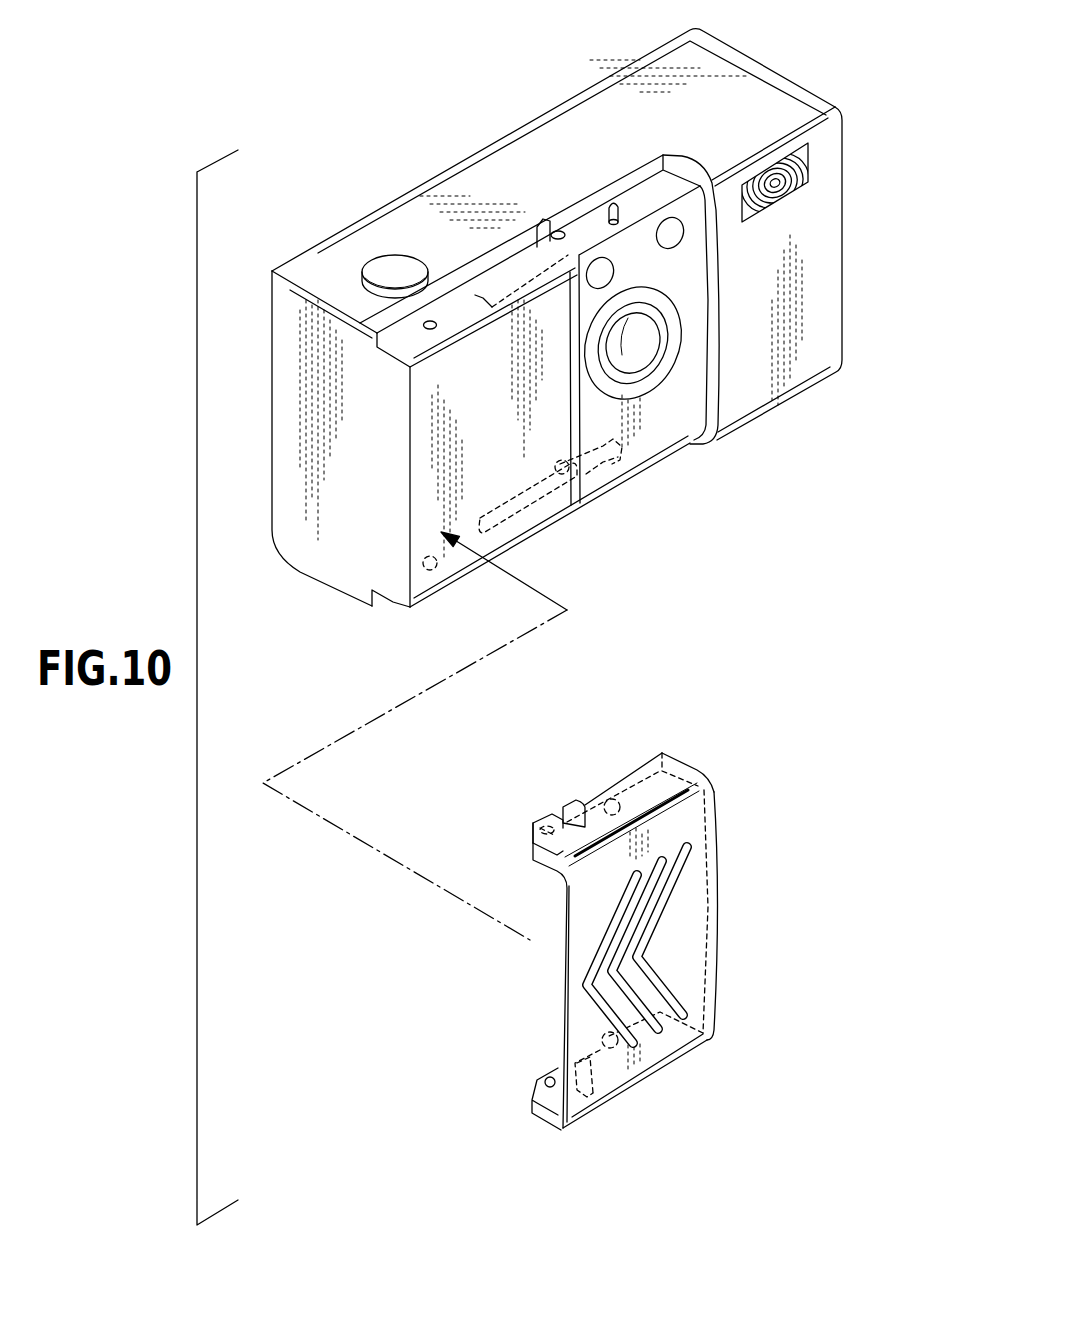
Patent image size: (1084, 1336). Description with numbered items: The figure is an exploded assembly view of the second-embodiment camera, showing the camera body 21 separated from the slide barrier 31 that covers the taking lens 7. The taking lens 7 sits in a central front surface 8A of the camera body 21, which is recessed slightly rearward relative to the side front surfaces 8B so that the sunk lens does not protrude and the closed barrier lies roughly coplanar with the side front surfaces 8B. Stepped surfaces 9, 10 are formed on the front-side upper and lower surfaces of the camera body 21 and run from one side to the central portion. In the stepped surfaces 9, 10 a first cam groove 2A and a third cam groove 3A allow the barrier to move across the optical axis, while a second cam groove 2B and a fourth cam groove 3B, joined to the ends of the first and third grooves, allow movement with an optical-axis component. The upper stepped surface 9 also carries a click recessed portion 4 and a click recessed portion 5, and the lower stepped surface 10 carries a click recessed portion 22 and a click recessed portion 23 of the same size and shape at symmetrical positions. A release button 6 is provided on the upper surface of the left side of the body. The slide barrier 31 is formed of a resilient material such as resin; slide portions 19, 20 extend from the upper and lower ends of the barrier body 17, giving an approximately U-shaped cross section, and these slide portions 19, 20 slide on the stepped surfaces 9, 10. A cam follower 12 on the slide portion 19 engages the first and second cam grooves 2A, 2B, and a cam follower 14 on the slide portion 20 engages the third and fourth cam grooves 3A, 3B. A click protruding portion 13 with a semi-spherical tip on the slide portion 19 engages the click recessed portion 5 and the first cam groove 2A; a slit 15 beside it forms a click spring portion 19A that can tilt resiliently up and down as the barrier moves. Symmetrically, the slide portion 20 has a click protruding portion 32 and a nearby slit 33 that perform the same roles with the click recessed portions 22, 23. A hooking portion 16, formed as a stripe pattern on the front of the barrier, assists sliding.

The camera body 21 is at (760, 84).
The first cam groove 2A is at (559, 228).
The second cam groove 2B is at (616, 206).
The click recessed portion 4 is at (545, 226).
The click recessed portion 5 is at (436, 316).
The release button 6 is at (390, 264).
The stepped surface 9 is at (403, 343).
The side front surfaces 8B is at (442, 398).
The central front surface 8A is at (688, 382).
The taking lens 7 is at (640, 362).
The third cam groove 3A is at (590, 466).
The fourth cam groove 3B is at (617, 455).
The click recessed portion 22 is at (562, 475).
The click recessed portion 23 is at (430, 572).
The stepped surface 10 is at (392, 603).
The slide barrier 31 is at (745, 818).
The cam follower 12 is at (612, 798).
The click protruding portion 13 is at (551, 826).
The slit 15 is at (577, 800).
The slide portion 19 is at (665, 778).
The click spring portion 19A is at (536, 838).
The barrier body 17 is at (690, 922).
The hooking portion 16 is at (668, 988).
The cam follower 14 is at (613, 1040).
The click protruding portion 32 is at (548, 1080).
The slit 33 is at (590, 1073).
The slide portion 20 is at (547, 1118).